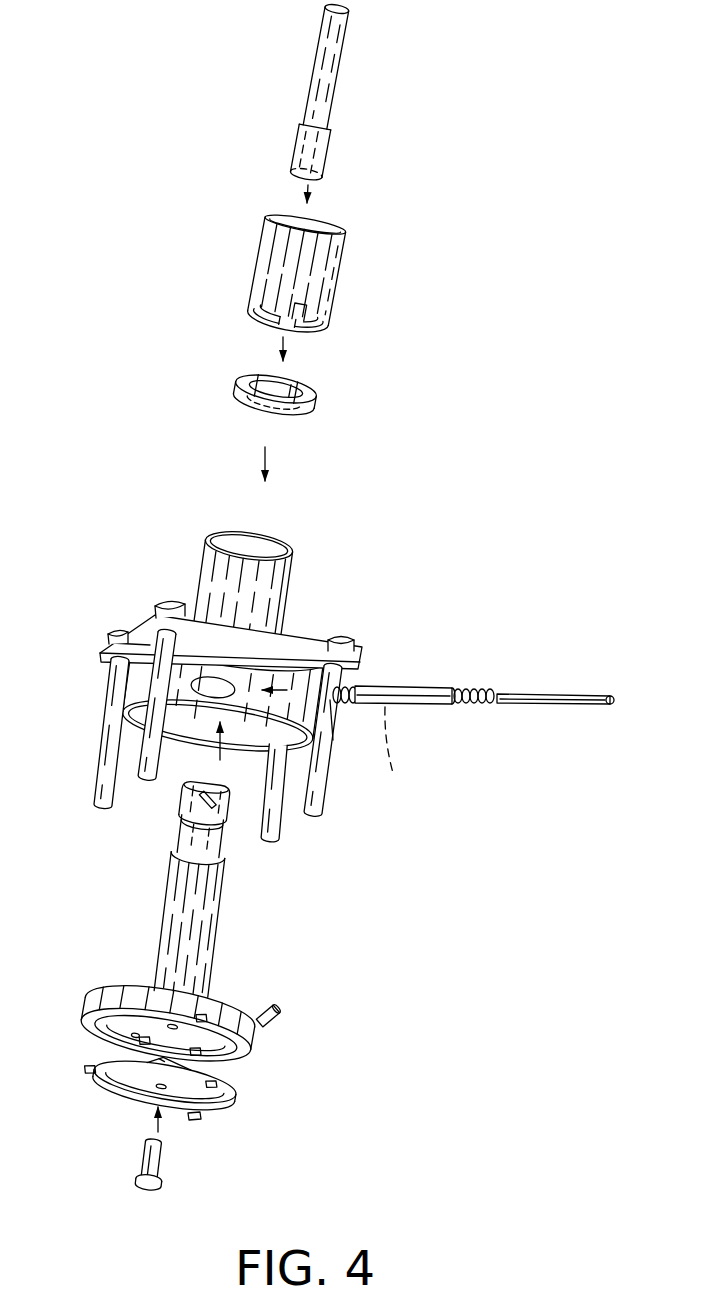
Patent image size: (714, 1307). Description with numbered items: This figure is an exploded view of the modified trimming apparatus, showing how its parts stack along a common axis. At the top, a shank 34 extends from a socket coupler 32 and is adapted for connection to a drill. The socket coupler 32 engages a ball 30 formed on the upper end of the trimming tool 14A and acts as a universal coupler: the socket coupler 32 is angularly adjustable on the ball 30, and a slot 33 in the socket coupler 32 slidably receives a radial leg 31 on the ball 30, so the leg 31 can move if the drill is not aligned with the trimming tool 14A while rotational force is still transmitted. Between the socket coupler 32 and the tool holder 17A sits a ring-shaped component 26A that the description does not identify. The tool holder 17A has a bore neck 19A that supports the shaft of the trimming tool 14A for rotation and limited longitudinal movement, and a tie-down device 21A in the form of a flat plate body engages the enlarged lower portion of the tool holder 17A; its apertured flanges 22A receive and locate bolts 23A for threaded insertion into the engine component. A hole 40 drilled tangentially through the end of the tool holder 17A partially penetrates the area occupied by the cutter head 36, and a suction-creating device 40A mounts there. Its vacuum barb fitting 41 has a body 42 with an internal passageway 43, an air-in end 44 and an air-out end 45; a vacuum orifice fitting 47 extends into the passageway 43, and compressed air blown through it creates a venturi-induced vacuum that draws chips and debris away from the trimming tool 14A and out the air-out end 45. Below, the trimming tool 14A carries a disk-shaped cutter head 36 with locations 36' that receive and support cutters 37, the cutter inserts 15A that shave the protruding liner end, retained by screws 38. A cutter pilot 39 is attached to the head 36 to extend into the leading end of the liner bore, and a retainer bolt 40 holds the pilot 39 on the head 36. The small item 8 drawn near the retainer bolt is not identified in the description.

The shank 34 is at (312, 73).
The socket coupler 32 is at (261, 233).
The slot 33 is at (303, 301).
The retaining ring 26A is at (232, 392).
The tool holder 17A is at (295, 546).
The bore neck 19A is at (289, 587).
The tie-down device 21A is at (304, 640).
The apertured flanges 22A is at (232, 637).
The bolts 23A is at (357, 637).
The retainer bolt 40 is at (205, 684).
The suction-creating device 40A is at (430, 720).
The body 42 is at (415, 687).
The air-in end 44 is at (488, 693).
The vacuum barb fitting 41 is at (447, 709).
The vacuum orifice fitting 47 is at (613, 708).
The internal passageway 43 is at (401, 754).
The air-out end 45 is at (332, 743).
The ball 30 is at (182, 805).
The radial leg 31 is at (227, 817).
The trimming tool 14A is at (160, 917).
The cutter head 36 is at (141, 1023).
The locations 36' is at (228, 1052).
The cutters 37 is at (282, 1020).
The screws 38 is at (277, 1010).
The cutter pilot 39 is at (239, 1087).
The cutter inserts 15A is at (203, 1118).
The bolt 8 is at (187, 1157).